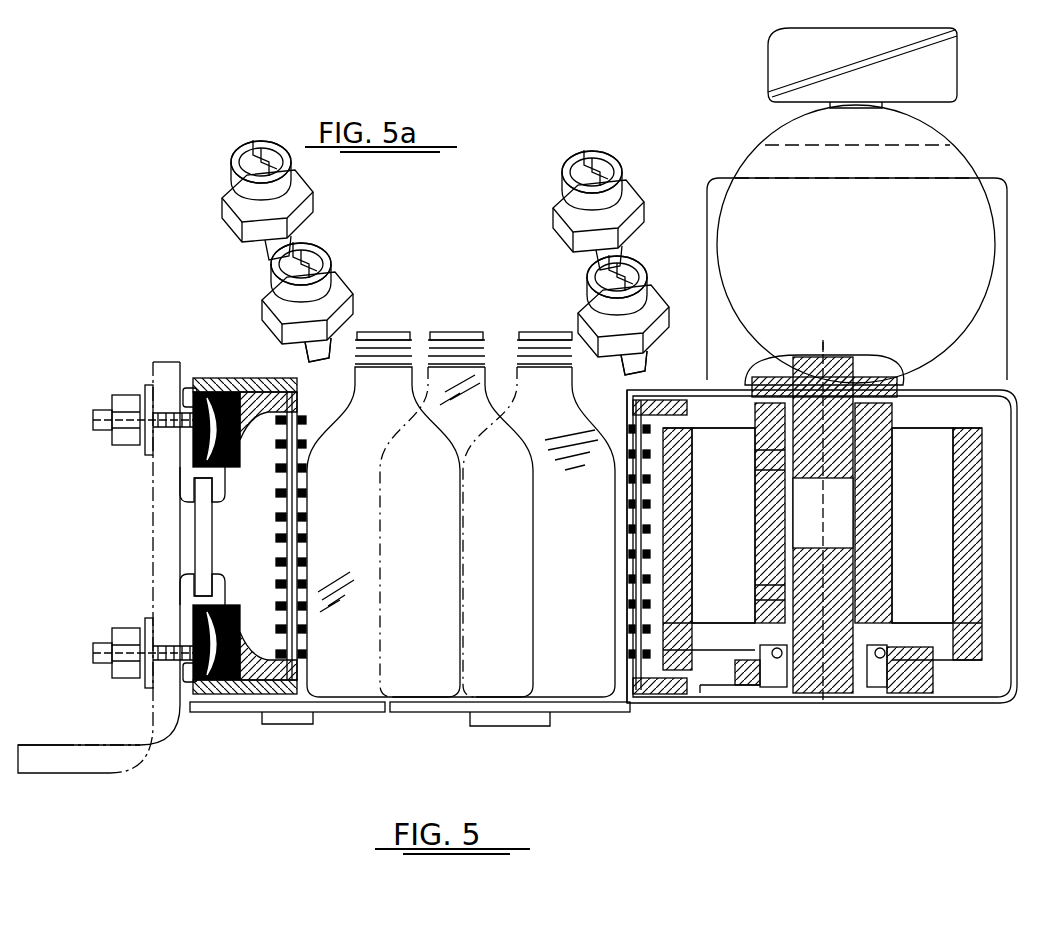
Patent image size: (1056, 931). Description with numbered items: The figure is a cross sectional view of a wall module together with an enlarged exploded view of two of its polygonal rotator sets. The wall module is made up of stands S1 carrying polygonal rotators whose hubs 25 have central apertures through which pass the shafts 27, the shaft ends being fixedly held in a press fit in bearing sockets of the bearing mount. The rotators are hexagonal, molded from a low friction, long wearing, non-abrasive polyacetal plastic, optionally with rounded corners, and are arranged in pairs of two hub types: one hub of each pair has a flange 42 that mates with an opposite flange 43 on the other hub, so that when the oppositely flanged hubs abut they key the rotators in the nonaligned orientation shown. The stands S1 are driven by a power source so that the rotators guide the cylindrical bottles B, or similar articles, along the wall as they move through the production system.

In FIG. 5A, the hub 25 is at (232, 170).
In FIG. 5, the hub 25 is at (280, 562).
In FIG. 5, the shaft 27 is at (288, 525).
In FIG. 5A, the flange 42 is at (310, 226).
In FIG. 5A, the flange 43 is at (297, 358).
In FIG. 5, the stand S1 is at (385, 585).
In FIG. 5, the bottle B is at (370, 715).